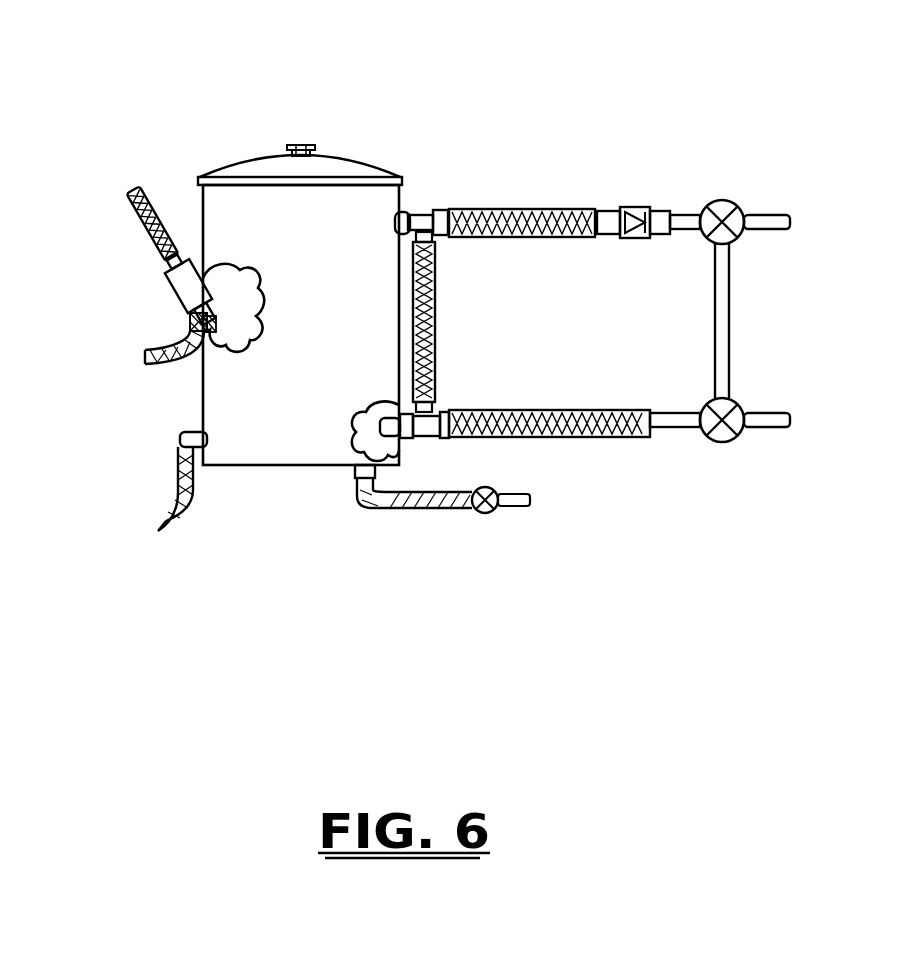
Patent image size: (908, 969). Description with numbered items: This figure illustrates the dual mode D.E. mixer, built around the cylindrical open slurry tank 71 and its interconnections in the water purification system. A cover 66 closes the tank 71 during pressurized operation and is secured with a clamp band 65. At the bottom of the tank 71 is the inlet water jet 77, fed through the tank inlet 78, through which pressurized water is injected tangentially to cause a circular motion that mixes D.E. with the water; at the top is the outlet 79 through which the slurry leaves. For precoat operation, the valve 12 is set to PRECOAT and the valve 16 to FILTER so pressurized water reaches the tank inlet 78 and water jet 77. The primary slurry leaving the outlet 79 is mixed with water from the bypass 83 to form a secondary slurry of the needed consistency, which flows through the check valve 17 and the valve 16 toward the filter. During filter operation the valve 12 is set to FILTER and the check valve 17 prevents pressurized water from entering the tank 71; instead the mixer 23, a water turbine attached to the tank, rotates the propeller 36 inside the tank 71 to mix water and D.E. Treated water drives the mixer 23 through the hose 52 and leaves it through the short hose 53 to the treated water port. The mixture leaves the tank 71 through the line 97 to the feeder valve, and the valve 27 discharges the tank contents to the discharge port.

The valve 12 is at (752, 538).
The valve 16 is at (741, 248).
The check valve 17 is at (574, 168).
The mixer 23 is at (134, 290).
The valve 27 is at (487, 571).
The propeller 36 is at (161, 196).
The hose 52 is at (113, 198).
The short hose 53 is at (126, 361).
The clamp band 65 is at (354, 115).
The cover 66 is at (316, 97).
The slurry tank 71 is at (222, 325).
The inlet water jet 77 is at (251, 541).
The tank inlet 78 is at (515, 545).
The outlet 79 is at (464, 166).
The bypass 83 is at (486, 322).
The line 97 is at (125, 481).